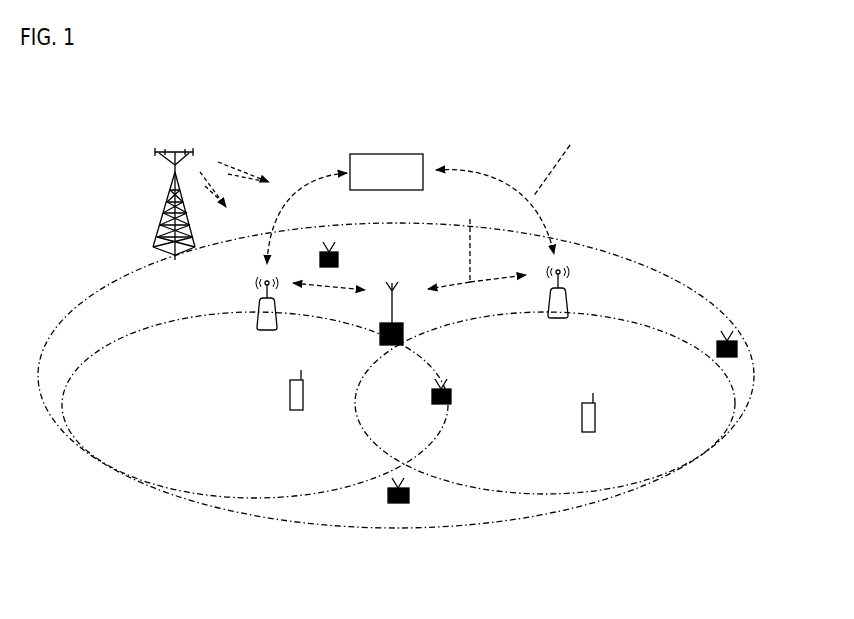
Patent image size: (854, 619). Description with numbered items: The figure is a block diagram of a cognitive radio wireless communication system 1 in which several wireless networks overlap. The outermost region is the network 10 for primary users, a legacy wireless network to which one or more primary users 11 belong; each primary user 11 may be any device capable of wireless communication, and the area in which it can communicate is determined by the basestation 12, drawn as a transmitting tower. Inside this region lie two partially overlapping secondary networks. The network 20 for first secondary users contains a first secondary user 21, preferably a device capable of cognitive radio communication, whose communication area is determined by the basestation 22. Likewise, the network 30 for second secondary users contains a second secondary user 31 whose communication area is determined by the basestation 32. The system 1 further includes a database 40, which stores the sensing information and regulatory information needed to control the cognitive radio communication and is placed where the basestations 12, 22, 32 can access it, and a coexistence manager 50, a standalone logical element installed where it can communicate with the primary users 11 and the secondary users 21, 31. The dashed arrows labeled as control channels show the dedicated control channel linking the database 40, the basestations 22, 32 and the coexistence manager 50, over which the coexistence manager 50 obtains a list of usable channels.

The wireless communication system 1 is at (690, 165).
The network for primary users 10 is at (226, 511).
The primary user 11 is at (727, 337).
The basestation 12 is at (150, 193).
The network for first secondary users 20 is at (291, 499).
The first secondary user 21 is at (283, 403).
The basestation 22 is at (258, 311).
The network for second secondary users 30 is at (537, 494).
The second secondary user 31 is at (597, 433).
The basestation 32 is at (571, 292).
The database 40 is at (406, 154).
The coexistence manager 50 is at (404, 320).